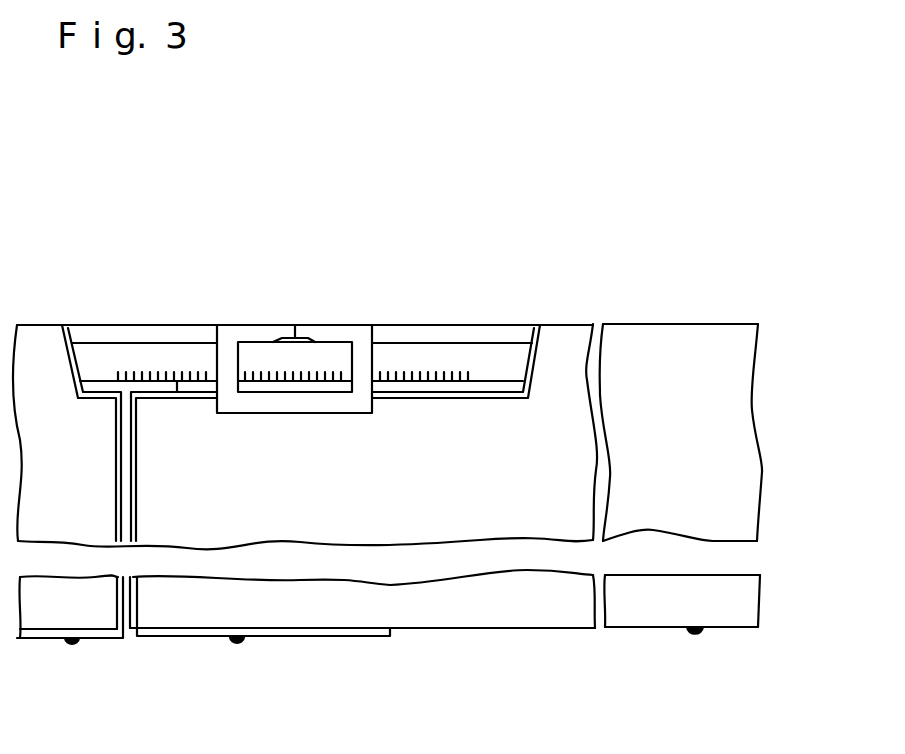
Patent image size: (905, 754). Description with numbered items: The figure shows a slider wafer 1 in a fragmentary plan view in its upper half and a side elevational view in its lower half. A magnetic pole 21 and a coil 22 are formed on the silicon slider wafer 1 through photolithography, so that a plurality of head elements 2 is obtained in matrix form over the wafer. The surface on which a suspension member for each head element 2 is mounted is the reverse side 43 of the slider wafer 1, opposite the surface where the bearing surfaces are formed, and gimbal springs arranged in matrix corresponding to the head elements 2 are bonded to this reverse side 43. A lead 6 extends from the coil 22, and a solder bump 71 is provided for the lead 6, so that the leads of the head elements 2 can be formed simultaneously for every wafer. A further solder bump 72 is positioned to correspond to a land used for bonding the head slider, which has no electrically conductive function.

The slider wafer 1 is at (738, 420).
The head element 2 is at (498, 332).
The magnetic pole 21 is at (278, 408).
The coil 22 is at (468, 375).
The lead 6 is at (112, 638).
The reverse side 43 is at (483, 628).
The solder bump 71 is at (258, 687).
The solder bump 72 is at (690, 635).